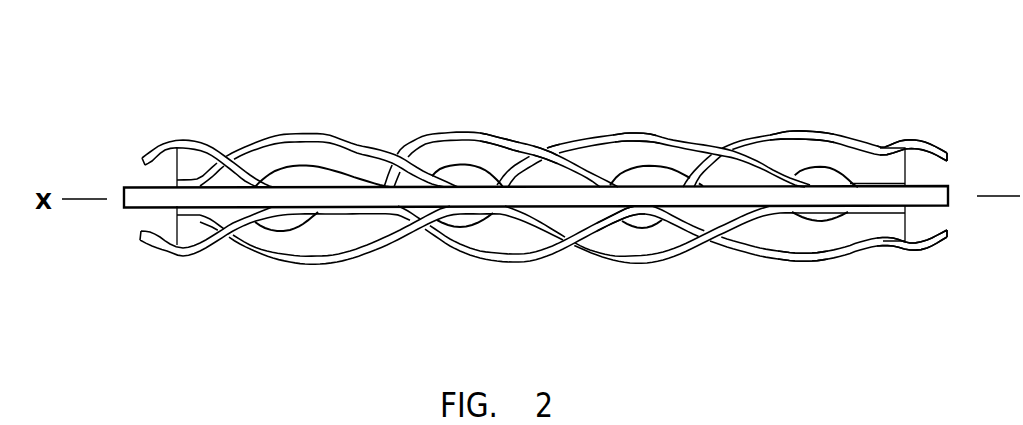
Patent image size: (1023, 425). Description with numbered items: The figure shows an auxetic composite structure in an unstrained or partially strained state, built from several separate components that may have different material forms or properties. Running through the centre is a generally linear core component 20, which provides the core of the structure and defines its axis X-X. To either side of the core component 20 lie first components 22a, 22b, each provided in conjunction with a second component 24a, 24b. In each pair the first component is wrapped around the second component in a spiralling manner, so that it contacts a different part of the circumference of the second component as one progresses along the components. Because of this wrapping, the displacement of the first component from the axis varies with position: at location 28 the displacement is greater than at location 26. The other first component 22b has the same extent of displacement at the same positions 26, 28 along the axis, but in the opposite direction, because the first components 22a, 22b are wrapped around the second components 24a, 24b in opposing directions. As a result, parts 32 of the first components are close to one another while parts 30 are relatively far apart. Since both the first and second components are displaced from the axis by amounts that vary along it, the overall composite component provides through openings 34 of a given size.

The core component 20 is at (208, 200).
The first component 22a is at (153, 150).
The first component 22b is at (152, 256).
The second component 24a is at (292, 150).
The second component 24b is at (298, 255).
The location 26 is at (542, 147).
The location 28 is at (641, 147).
The parts of the first component 30 is at (883, 147).
The parts of the first component 32 is at (802, 147).
The through openings 34 is at (500, 148).